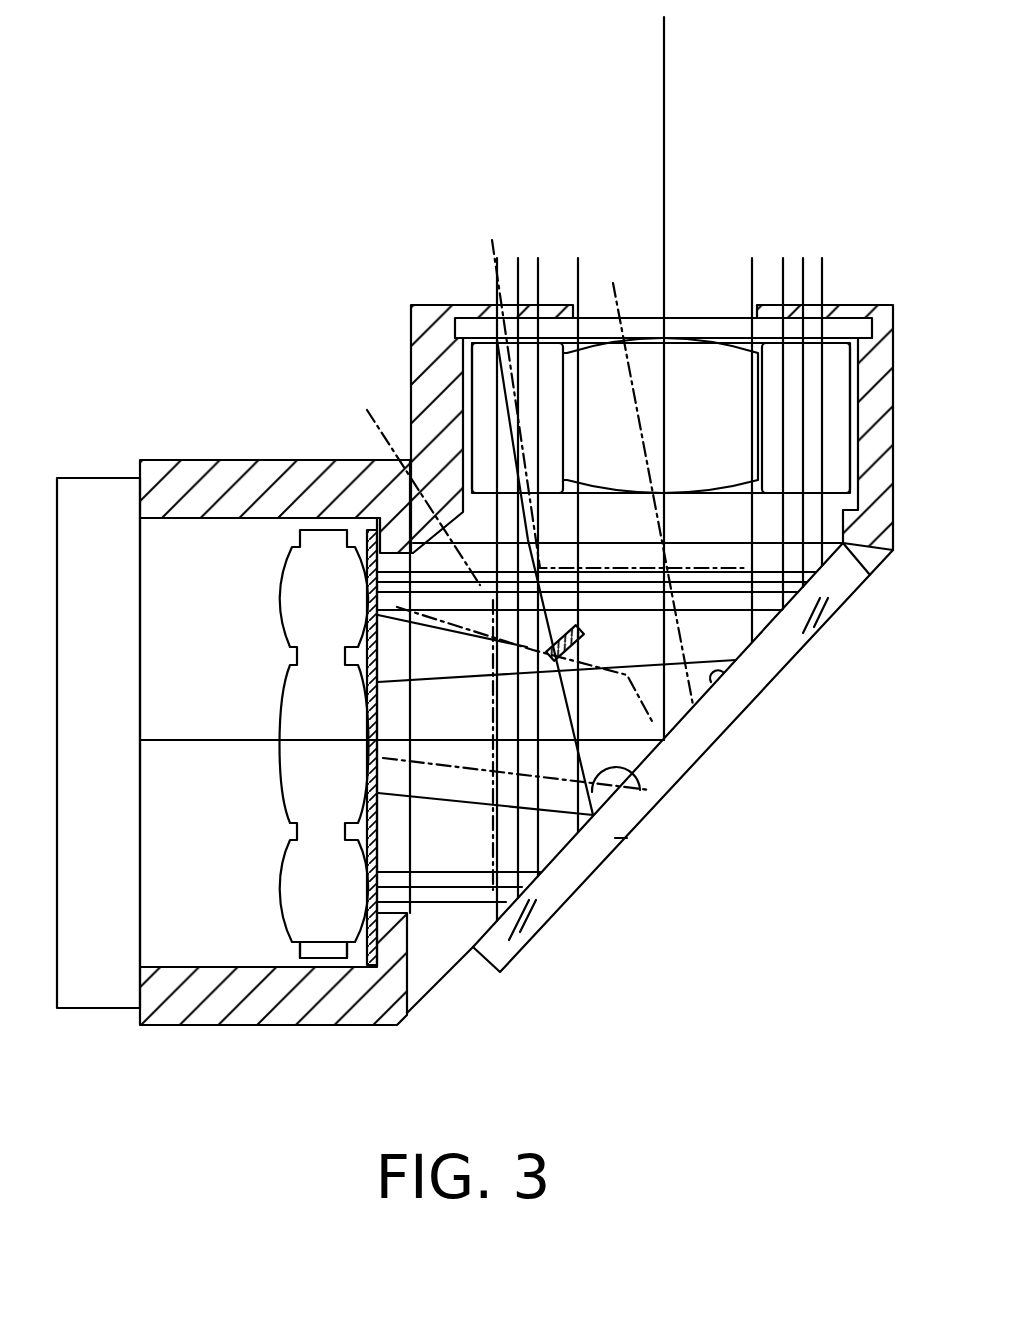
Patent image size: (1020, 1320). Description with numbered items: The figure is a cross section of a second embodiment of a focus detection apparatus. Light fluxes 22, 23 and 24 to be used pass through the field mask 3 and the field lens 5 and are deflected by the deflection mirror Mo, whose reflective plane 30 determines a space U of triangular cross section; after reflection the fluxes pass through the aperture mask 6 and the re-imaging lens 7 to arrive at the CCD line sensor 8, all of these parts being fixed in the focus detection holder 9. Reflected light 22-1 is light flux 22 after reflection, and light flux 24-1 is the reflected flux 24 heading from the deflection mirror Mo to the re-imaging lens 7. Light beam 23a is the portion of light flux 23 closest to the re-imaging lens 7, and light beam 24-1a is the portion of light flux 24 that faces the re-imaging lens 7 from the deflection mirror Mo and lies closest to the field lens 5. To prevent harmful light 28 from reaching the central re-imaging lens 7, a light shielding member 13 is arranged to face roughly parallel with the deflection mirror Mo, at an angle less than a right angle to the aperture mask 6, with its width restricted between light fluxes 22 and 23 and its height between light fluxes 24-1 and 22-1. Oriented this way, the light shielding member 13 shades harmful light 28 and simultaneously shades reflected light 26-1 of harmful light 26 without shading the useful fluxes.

The field mask 3 is at (847, 305).
The field lens 5 is at (850, 427).
The aperture mask 6 is at (367, 965).
The re-imaging lens 7 is at (320, 960).
The CCD line sensor 8 is at (97, 497).
The focus detection holder 9 is at (220, 477).
The light shielding member 13 is at (582, 655).
The light flux to be used 22 is at (575, 244).
The reflected light of light flux 22 22-1 is at (437, 683).
The light flux to be used 23 is at (545, 244).
The light beam 23a is at (497, 825).
The light flux to be used 24 is at (832, 244).
The light flux to be used 24-1 is at (377, 610).
The light beam 24-1a is at (795, 655).
The harmful light 26 is at (630, 377).
The reflected light of harmful light 26 26-1 is at (690, 768).
The harmful light 28 is at (648, 795).
The reflective plane 30 is at (723, 678).
The space U is at (411, 479).
The deflection mirror Mo is at (627, 838).